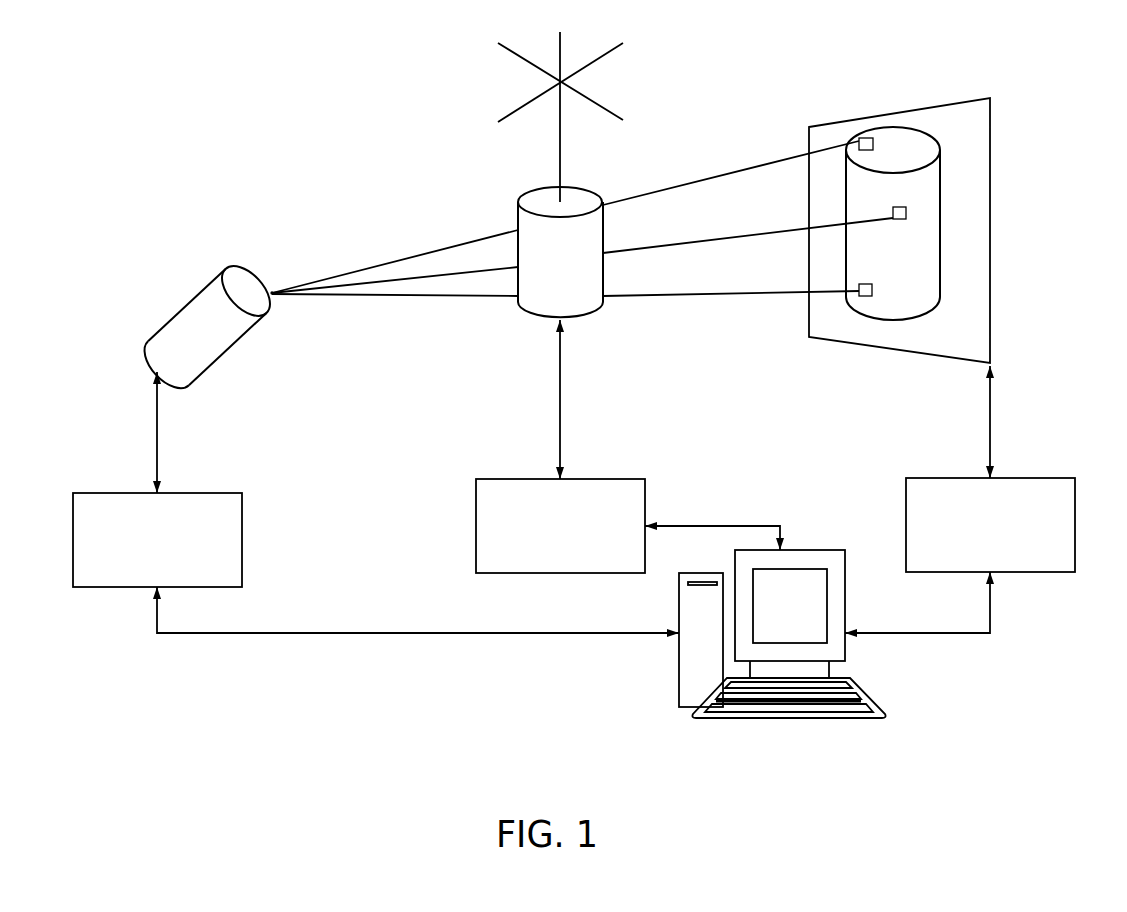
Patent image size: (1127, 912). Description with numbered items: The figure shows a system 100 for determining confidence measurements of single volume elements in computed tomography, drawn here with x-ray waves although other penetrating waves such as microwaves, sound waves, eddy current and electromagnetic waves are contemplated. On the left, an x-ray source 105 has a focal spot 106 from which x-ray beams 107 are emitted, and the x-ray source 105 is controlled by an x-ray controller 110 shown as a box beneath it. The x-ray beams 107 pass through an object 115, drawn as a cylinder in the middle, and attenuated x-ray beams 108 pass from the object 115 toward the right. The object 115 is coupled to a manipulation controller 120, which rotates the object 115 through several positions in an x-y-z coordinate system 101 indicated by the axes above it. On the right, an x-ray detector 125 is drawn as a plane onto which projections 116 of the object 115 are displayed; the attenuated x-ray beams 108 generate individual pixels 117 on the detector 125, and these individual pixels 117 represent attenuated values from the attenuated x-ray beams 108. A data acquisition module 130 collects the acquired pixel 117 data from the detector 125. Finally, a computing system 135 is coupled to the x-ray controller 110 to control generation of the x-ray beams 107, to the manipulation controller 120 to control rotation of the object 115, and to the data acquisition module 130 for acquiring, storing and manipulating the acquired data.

The system 100 is at (175, 97).
The x-y-z coordinate system 101 is at (493, 78).
The x-ray source 105 is at (193, 323).
The focal spot 106 is at (272, 289).
The x-ray beams 107 is at (405, 297).
The attenuated x-ray beams 108 is at (670, 295).
The x-ray controller 110 is at (137, 553).
The object 115 is at (517, 213).
The projections 116 is at (915, 140).
The individual pixels 117 is at (872, 290).
The manipulation controller 120 is at (540, 538).
The x-ray detector 125 is at (826, 122).
The data acquisition module 130 is at (970, 540).
The computing system 135 is at (678, 678).